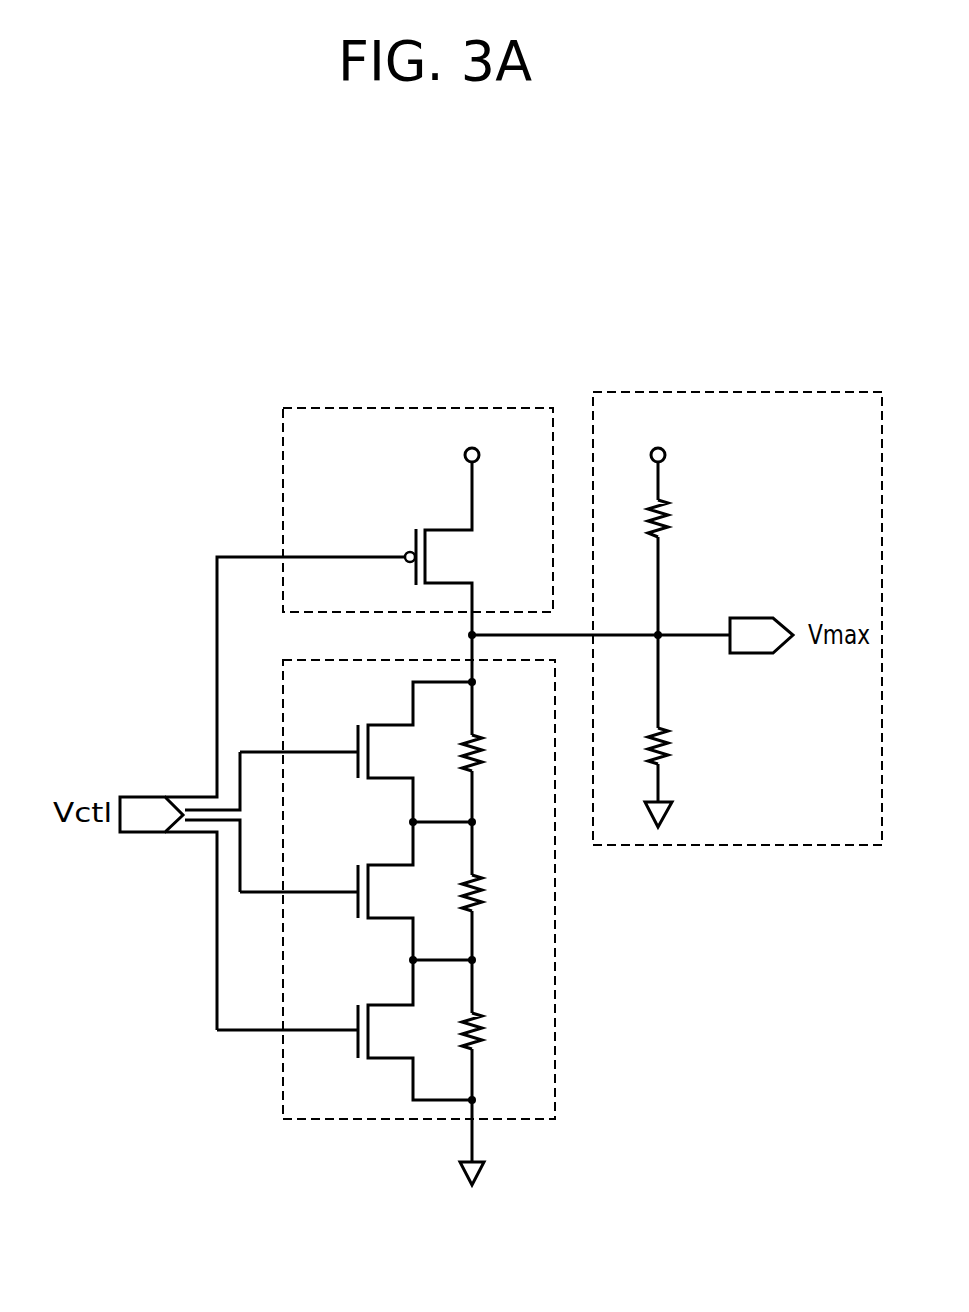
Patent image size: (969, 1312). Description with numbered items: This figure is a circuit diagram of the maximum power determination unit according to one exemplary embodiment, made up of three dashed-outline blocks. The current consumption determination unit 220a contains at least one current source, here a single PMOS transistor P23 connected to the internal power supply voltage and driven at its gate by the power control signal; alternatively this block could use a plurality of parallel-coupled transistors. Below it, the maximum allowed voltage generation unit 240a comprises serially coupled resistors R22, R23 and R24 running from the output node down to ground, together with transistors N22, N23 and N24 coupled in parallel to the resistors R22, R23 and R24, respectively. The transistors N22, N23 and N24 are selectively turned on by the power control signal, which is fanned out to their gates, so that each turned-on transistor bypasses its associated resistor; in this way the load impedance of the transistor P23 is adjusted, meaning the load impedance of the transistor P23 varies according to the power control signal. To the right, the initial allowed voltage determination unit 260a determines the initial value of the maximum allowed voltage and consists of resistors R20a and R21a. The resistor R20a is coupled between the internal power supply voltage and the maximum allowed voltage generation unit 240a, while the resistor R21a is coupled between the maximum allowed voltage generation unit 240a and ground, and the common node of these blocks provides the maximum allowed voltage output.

The current consumption determination unit 220a is at (415, 407).
The maximum allowed voltage generation unit 240a is at (555, 923).
The initial allowed voltage determination unit 260a is at (735, 392).
The PMOS transistor P23 is at (462, 548).
The transistor N22 is at (356, 752).
The transistor N23 is at (356, 891).
The transistor N24 is at (344, 1030).
The resistor R22 is at (500, 753).
The resistor R23 is at (500, 893).
The resistor R24 is at (500, 1031).
The resistor R20a is at (695, 518).
The resistor R21a is at (695, 746).